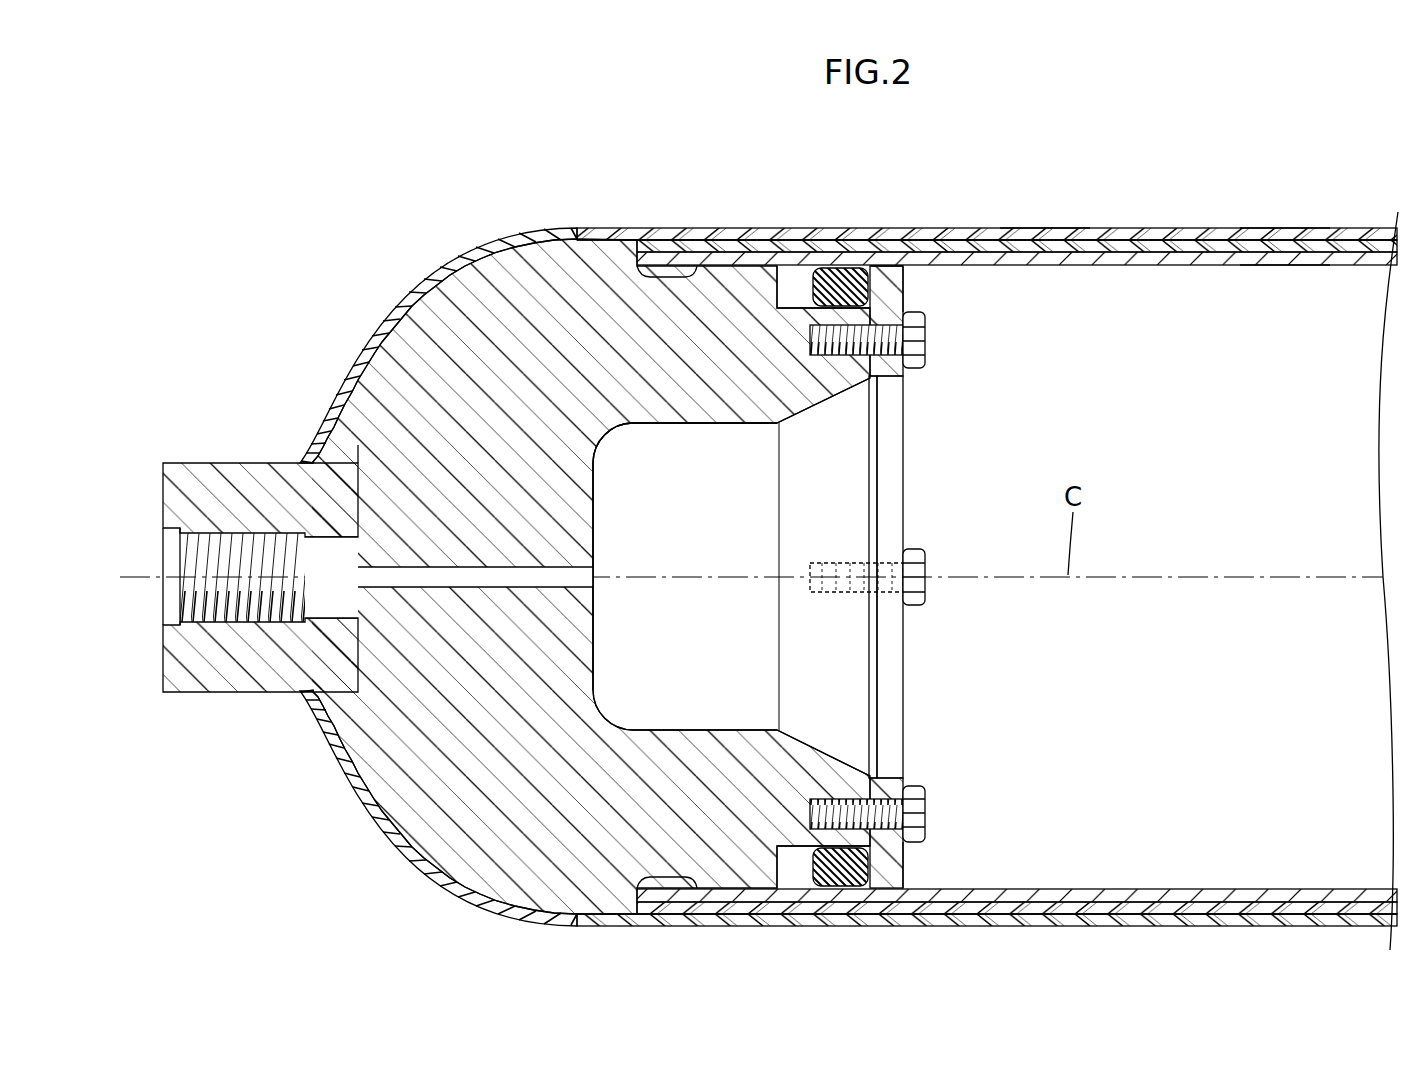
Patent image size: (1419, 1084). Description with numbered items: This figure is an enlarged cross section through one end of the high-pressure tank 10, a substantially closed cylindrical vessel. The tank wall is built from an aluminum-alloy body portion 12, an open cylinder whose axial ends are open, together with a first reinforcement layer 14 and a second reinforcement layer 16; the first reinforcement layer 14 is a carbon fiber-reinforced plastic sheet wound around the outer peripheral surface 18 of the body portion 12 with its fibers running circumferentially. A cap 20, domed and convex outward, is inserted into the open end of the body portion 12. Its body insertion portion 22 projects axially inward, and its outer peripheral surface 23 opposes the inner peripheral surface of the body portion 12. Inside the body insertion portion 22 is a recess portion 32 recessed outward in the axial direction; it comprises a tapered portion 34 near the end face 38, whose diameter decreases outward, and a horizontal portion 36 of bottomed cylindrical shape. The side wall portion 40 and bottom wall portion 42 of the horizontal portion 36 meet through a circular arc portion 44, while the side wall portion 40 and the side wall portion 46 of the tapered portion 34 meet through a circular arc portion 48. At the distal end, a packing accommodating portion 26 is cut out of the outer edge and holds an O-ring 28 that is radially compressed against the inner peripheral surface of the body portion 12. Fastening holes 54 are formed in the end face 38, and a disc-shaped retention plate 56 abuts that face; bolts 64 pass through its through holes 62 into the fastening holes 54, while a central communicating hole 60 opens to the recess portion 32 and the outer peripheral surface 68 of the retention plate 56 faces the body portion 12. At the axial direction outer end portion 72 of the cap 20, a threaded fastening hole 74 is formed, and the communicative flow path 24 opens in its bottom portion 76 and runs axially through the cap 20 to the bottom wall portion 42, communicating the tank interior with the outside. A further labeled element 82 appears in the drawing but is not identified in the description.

The high-pressure tank 10 is at (1187, 199).
The body portion 12 is at (1145, 256).
The first reinforcement layer 14 is at (1128, 240).
The second reinforcement layer 16 is at (1043, 235).
The outer peripheral surface 18 is at (1283, 250).
The cap 20 is at (951, 555).
The body insertion portion 22 is at (748, 262).
The outer peripheral surface 23 is at (720, 266).
The communicative flow path 24 is at (595, 575).
The packing accommodating portion 26 is at (803, 277).
The O-ring 28 is at (837, 272).
The recess portion 32 is at (230, 465).
The tapered portion 34 is at (824, 418).
The horizontal portion 36 is at (703, 438).
The end face 38 is at (903, 438).
The side wall portion 40 is at (668, 425).
The bottom wall portion 42 is at (595, 522).
The circular arc portion 44 is at (607, 438).
The side wall portion 46 is at (810, 410).
The circular arc portion 48 is at (778, 435).
The fastening holes 54 is at (923, 345).
The retention plate 56 is at (927, 280).
The communicating hole 60 is at (905, 392).
The through holes 62 is at (923, 328).
The bolts 64 is at (910, 313).
The outer peripheral surface 68 is at (893, 272).
The axial direction outer end portion 72 is at (370, 347).
The fastening hole 74 is at (180, 552).
The bottom portion 76 is at (313, 533).
The gap 82 is at (337, 450).